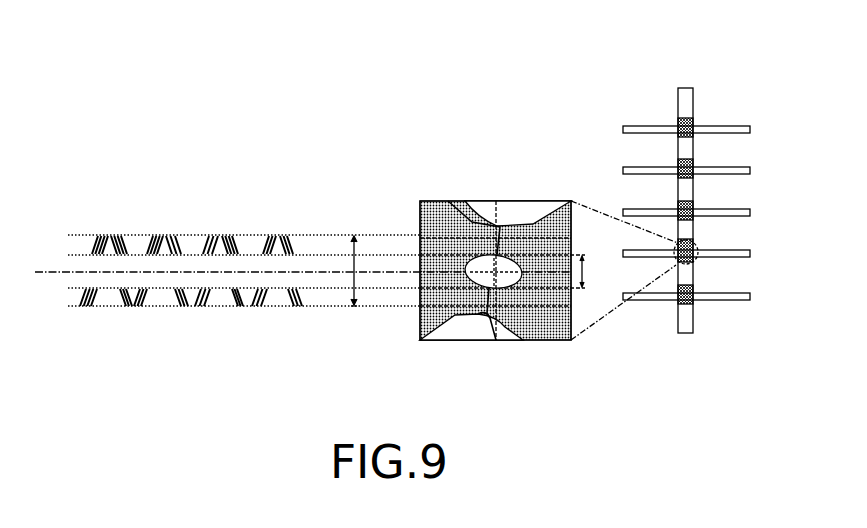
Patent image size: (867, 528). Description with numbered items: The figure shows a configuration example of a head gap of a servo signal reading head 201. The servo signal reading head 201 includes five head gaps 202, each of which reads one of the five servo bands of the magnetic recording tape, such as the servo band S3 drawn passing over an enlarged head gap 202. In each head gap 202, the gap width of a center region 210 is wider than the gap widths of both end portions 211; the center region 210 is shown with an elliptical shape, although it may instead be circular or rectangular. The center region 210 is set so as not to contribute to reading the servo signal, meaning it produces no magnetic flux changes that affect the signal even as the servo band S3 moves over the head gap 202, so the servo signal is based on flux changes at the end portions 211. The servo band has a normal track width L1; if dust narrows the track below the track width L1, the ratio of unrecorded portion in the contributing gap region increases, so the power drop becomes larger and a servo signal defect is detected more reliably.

The servo signal reading head 201 is at (686, 88).
The head gap 202 is at (497, 222).
The center region 210 is at (420, 216).
The end portions 211 is at (458, 204).
The track width L1 is at (353, 240).
The servo band S3 is at (354, 310).